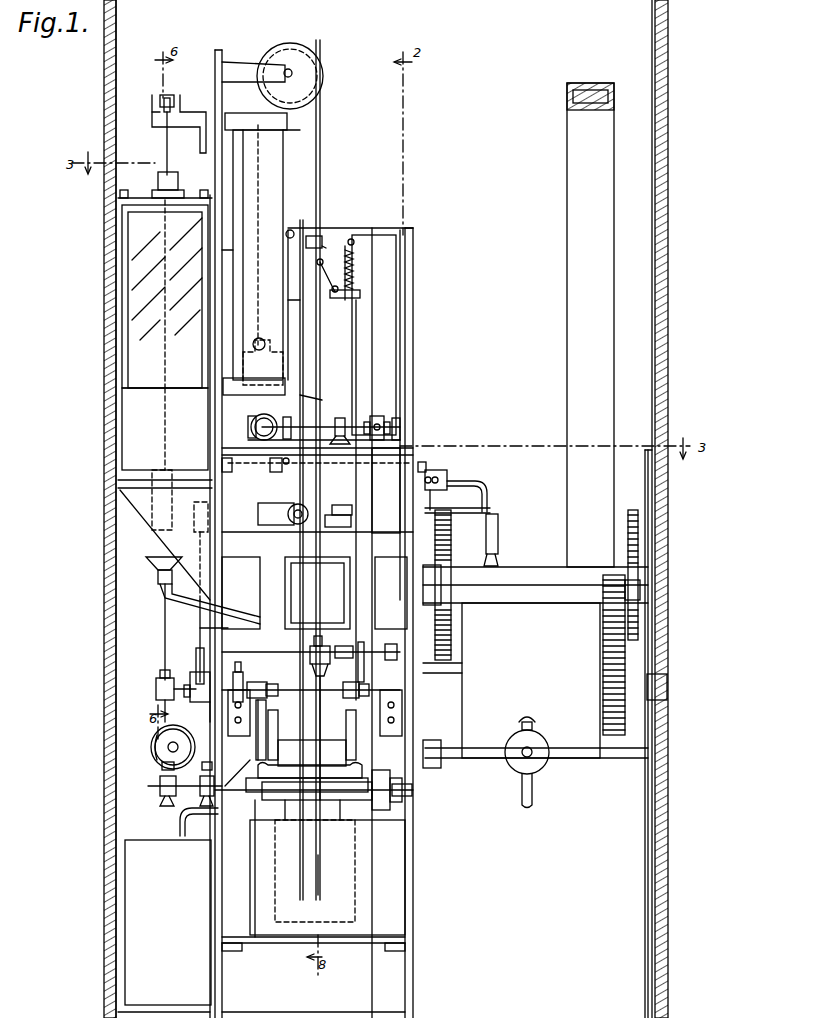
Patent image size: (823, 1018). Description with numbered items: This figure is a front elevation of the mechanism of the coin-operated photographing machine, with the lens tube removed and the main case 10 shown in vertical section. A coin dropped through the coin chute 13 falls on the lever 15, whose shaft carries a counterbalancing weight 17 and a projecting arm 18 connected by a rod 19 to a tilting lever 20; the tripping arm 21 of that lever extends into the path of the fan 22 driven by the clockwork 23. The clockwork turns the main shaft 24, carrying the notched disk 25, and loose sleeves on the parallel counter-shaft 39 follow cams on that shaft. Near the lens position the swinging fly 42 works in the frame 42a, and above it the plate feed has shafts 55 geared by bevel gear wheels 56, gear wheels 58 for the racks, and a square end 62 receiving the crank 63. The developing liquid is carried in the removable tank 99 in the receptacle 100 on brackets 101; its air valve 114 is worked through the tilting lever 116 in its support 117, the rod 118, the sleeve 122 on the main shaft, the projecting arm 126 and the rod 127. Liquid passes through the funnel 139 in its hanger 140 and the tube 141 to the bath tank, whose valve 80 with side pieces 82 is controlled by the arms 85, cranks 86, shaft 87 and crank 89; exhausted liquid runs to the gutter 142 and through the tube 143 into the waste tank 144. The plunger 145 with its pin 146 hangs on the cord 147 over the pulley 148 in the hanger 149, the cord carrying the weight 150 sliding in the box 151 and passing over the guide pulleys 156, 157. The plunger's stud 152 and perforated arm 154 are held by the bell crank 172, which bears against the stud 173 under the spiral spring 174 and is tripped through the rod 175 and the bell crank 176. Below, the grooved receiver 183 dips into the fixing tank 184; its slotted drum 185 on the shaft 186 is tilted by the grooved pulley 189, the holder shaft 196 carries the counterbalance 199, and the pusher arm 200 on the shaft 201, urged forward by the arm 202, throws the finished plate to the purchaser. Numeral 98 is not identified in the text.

The main case 10 is at (658, 556).
The coin chute 13 is at (590, 325).
The lever 15 is at (535, 805).
The counterbalancing weight 17 is at (533, 766).
The projecting arm 18 is at (318, 397).
The rod 19 is at (440, 496).
The tilting lever 20 is at (537, 622).
The tripping arm 21 is at (489, 499).
The fan 22 is at (495, 530).
The clockwork 23 is at (535, 661).
The main shaft 24 is at (172, 722).
The disk 25 is at (200, 702).
The counter-shaft 39 is at (208, 706).
The swinging fly 42 is at (314, 593).
The frame 42a is at (295, 538).
The shafts 55 is at (265, 418).
The bevel gear wheels 56 is at (252, 424).
The gear wheels 58 is at (342, 420).
The square end 62 is at (400, 420).
The crank 63 is at (405, 484).
The valve 80 is at (330, 748).
The side pieces 82 is at (276, 735).
The arms 85 is at (274, 722).
The cranks 86 is at (270, 688).
The shaft 87 is at (291, 683).
The crank 89 is at (264, 660).
The bracket 98 is at (245, 700).
The removable tank 99 is at (130, 350).
The receptacle 100 is at (130, 452).
The brackets 101 is at (155, 520).
The valve 114 is at (178, 180).
The tilting lever 116 is at (170, 96).
The support 117 is at (193, 122).
The rod 118 is at (167, 150).
The sleeve 122 is at (164, 680).
The projecting arm 126 is at (211, 642).
The rod 127 is at (212, 628).
The funnel 139 is at (160, 562).
The hanger 140 is at (162, 582).
The tube 141 is at (170, 600).
The gutter 142 is at (378, 788).
The tube 143 is at (240, 800).
The waste tank 144 is at (168, 922).
The plunger 145 is at (318, 233).
The pin 146 is at (303, 225).
The cord 147 is at (258, 104).
The pulley 148 is at (292, 45).
The hanger 149 is at (244, 70).
The weight 150 is at (288, 350).
The box 151 is at (283, 176).
The stud 152 is at (328, 248).
The perforated arm 154 is at (320, 250).
The guide pulley 156 is at (350, 520).
The guide pulley 157 is at (312, 516).
The bell crank 172 is at (332, 288).
The stud 173 is at (340, 300).
The spiral spring 174 is at (352, 285).
The rod 175 is at (360, 328).
The bell crank 176 is at (364, 648).
The grooved receiver 183 is at (345, 808).
The tank 184 is at (327, 877).
The slotted drum 185 is at (333, 800).
The shaft 186 is at (266, 792).
The grooved pulley 189 is at (402, 798).
The shaft 196 is at (194, 790).
The counterbalance 199 is at (158, 758).
The pusher arm 200 is at (320, 800).
The shaft 201 is at (348, 645).
The arm 202 is at (314, 640).